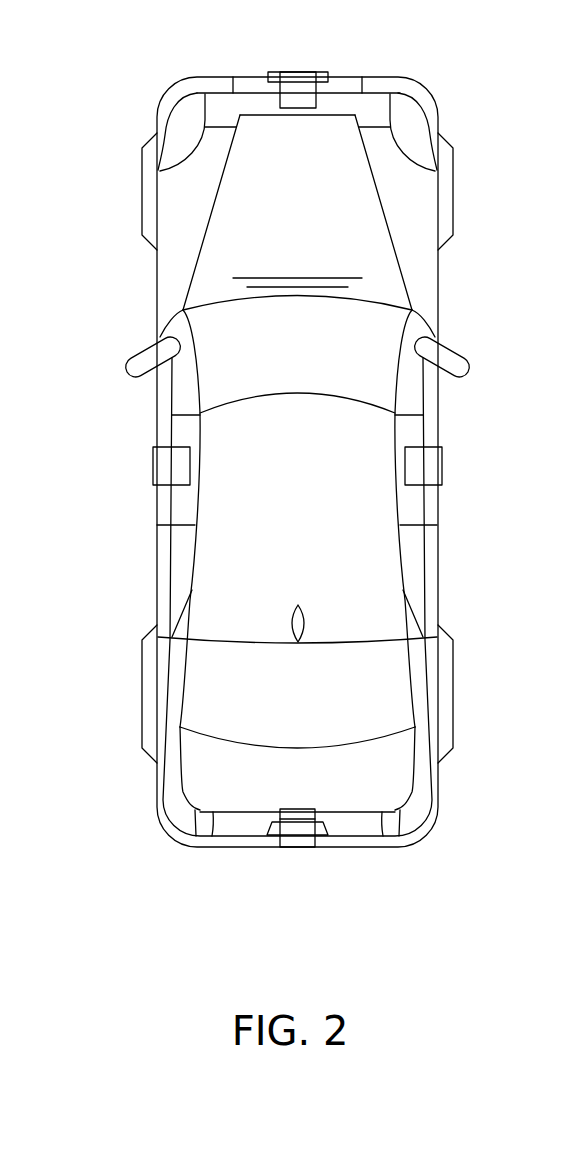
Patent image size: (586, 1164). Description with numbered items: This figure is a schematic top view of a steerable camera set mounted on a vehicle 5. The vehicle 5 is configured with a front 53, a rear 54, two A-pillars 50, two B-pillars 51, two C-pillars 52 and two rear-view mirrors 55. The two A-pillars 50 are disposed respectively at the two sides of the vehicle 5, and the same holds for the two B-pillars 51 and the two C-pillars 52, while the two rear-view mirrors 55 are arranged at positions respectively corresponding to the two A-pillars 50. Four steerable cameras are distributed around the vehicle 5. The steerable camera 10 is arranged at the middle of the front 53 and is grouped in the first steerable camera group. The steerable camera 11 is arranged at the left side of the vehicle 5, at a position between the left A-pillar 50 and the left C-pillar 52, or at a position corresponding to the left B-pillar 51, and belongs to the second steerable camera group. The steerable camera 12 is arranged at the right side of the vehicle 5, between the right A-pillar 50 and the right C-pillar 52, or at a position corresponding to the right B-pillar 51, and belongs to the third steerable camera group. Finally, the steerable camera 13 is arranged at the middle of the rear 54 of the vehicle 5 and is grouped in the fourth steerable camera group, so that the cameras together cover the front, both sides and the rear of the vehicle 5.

The vehicle 5 is at (422, 87).
The front 53 is at (273, 147).
The steerable camera 10 is at (298, 110).
The A-pillars 50 is at (405, 308).
The rear-view mirrors 55 is at (127, 362).
The steerable camera 11 is at (153, 465).
The steerable camera 12 is at (440, 463).
The B-pillars 51 is at (435, 525).
The C-pillars 52 is at (443, 627).
The rear 54 is at (200, 768).
The steerable camera 13 is at (298, 810).